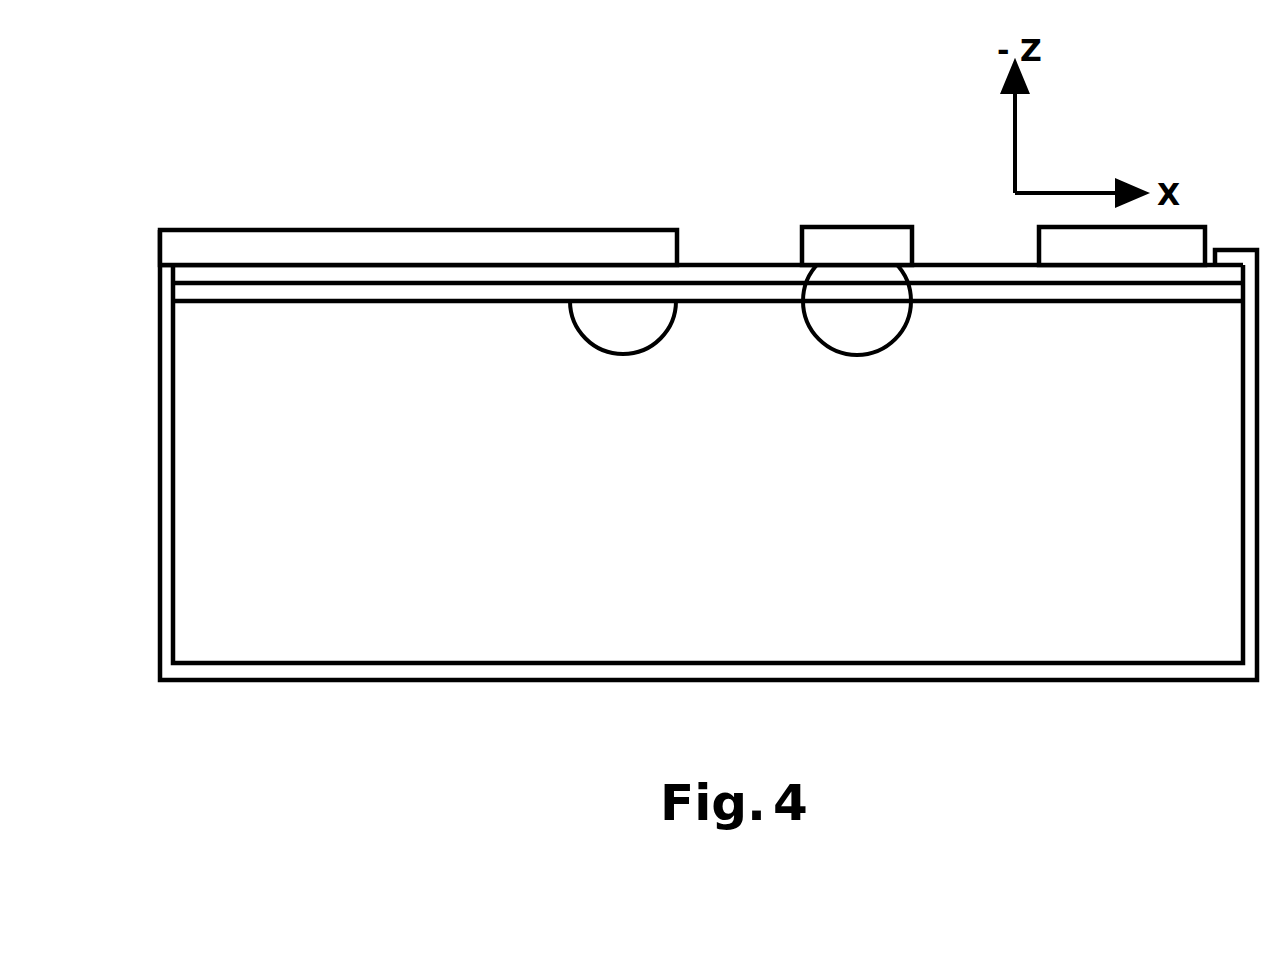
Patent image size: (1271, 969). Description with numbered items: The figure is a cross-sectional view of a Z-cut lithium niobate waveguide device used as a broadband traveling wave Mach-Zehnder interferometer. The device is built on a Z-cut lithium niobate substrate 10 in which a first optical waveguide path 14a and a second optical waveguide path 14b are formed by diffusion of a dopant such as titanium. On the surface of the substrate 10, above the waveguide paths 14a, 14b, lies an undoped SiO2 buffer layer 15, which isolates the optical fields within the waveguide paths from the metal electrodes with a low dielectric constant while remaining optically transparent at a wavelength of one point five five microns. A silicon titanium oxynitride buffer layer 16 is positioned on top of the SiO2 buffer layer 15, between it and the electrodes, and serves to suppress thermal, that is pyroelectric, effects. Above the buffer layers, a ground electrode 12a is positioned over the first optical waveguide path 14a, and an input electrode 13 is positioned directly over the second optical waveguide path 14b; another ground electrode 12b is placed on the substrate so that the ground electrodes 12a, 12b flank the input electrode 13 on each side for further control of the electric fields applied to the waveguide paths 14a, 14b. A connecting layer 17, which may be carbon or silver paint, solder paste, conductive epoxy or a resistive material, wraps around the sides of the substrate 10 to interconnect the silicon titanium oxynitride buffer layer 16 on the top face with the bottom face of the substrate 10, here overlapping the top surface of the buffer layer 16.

The Z-cut lithium niobate substrate 10 is at (228, 340).
The ground electrode 12a is at (418, 247).
The ground electrode 12b is at (1122, 246).
The input electrode 13 is at (857, 246).
The first optical waveguide path 14a is at (623, 327).
The second optical waveguide path 14b is at (857, 301).
The undoped SiO2 buffer layer 15 is at (480, 292).
The silicon titanium oxynitride buffer layer 16 is at (540, 275).
The connecting layer 17 is at (987, 672).